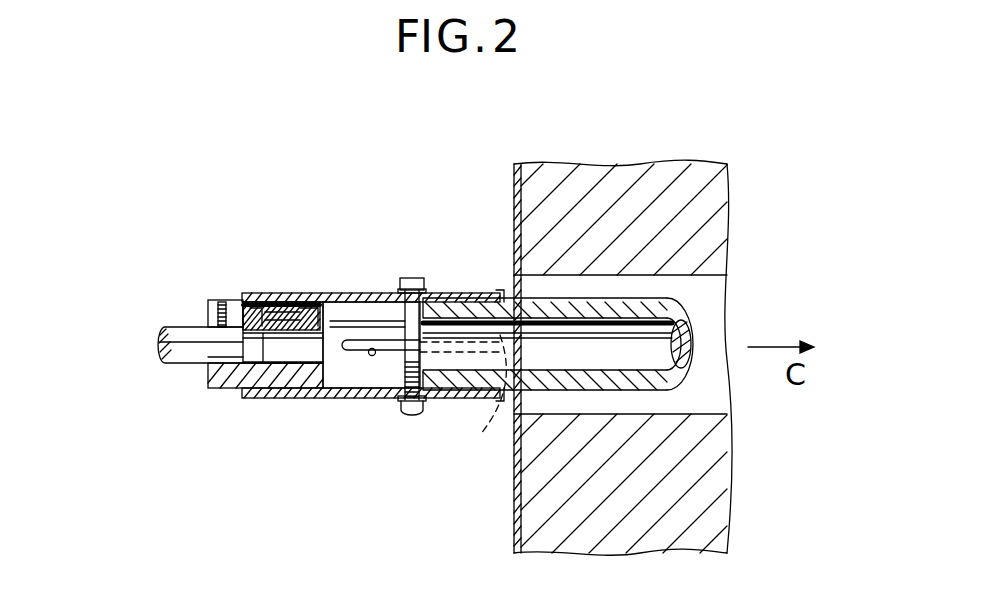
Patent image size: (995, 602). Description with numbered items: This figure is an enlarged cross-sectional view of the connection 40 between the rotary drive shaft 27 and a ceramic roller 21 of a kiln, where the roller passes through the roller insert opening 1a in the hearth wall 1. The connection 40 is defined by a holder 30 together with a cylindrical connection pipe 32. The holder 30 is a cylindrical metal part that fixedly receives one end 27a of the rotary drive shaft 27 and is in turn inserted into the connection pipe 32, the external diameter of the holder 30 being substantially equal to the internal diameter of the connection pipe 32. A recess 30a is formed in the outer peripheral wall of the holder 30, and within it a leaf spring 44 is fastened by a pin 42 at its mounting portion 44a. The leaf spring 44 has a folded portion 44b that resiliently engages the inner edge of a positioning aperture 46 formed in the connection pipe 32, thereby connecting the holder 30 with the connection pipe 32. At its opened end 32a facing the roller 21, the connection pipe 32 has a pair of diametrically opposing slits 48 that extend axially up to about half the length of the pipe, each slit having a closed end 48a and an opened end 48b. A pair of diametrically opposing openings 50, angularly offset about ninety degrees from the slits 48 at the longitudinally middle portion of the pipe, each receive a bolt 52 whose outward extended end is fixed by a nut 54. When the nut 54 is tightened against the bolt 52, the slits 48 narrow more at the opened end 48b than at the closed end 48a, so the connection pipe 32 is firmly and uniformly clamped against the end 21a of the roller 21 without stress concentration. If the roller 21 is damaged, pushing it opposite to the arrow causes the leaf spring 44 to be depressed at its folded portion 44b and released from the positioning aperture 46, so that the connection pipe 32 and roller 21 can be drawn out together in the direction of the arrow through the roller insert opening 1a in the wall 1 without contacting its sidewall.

The wall 1 is at (612, 190).
The roller insert opening 1a is at (690, 395).
The roller 21 is at (692, 299).
The end of roller 21a is at (445, 297).
The rotary drive shaft 27 is at (172, 330).
The end of rotary drive shaft 27a is at (214, 389).
The holder 30 is at (220, 300).
The recess 30a is at (262, 389).
The connection pipe 32 is at (338, 293).
The opened end of connection pipe 32a is at (500, 292).
The connection 40 is at (305, 244).
The pin 42 is at (300, 300).
The leaf spring 44 is at (288, 298).
The mounting portion of leaf spring 44a is at (315, 298).
The folded portion of leaf spring 44b is at (272, 298).
The positioning aperture 46 is at (262, 302).
The slits 48 is at (372, 356).
The closed end of slit 48a is at (347, 350).
The opened end of slit 48b is at (463, 399).
The openings 50 is at (419, 280).
The bolt 52 is at (403, 280).
The nut 54 is at (407, 414).